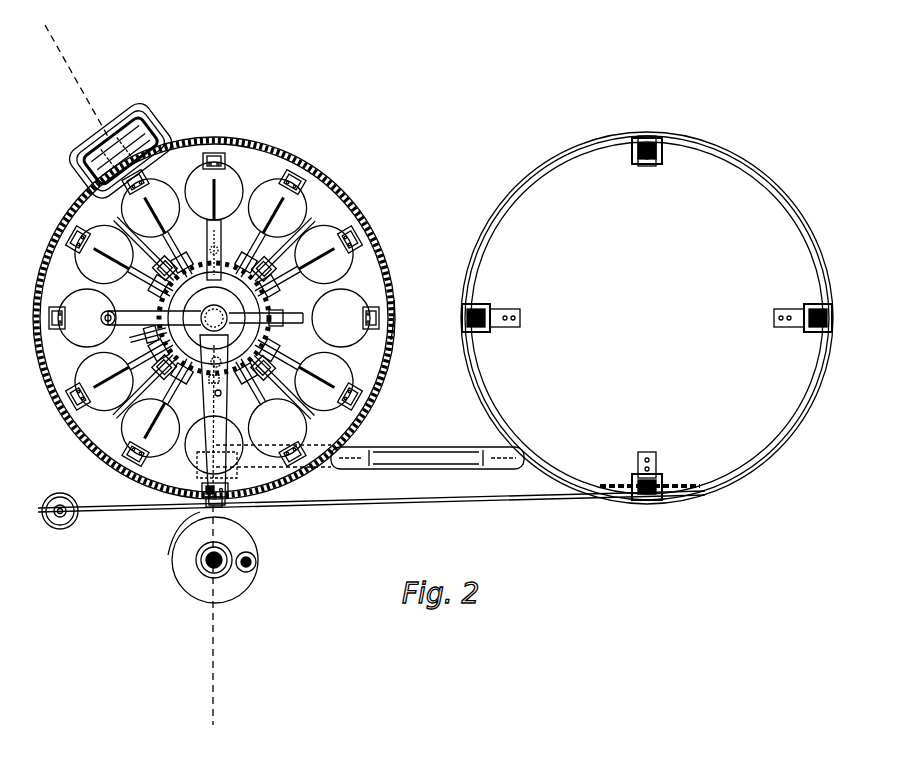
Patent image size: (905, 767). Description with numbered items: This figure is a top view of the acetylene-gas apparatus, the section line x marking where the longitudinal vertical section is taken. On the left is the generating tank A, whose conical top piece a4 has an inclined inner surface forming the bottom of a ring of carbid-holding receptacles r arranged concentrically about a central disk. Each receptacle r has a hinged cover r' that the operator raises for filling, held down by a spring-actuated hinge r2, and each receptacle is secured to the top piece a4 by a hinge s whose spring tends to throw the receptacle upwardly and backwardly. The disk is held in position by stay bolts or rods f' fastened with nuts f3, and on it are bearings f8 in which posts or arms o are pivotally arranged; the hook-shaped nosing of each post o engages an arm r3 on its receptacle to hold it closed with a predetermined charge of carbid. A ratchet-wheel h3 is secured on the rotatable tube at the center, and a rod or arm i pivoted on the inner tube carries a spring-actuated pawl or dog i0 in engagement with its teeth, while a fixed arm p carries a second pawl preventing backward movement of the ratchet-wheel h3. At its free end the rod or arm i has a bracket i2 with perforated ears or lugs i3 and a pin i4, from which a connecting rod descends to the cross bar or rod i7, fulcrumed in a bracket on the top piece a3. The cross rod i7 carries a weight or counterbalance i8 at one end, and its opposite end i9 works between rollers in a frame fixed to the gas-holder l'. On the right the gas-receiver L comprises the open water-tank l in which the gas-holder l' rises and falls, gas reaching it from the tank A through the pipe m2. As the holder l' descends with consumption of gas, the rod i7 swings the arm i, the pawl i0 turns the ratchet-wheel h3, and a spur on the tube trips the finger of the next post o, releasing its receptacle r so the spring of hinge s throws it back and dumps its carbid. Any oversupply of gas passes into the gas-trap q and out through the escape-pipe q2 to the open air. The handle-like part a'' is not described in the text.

The section line x is at (140, 377).
The tank A is at (214, 310).
The handle a'' is at (121, 144).
The top piece a3 is at (140, 310).
The top piece a4 is at (397, 290).
The hinged cover r' is at (214, 318).
The carbid-holding receptacle r is at (229, 299).
The spring-actuated hinge r2 is at (235, 175).
The arm r3 is at (222, 225).
The hinge s is at (222, 150).
The stay bolt or rod f' is at (214, 318).
The nut f3 is at (160, 350).
The bearing f8 is at (276, 312).
The ratchet-wheel h3 is at (290, 345).
The arm or post o is at (226, 332).
The arm p is at (223, 260).
The rod or arm i is at (213, 450).
The spring-actuated pawl or dog i0 is at (231, 362).
The bracket i2 is at (650, 136).
The perforated ears or lugs i3 is at (800, 335).
The pin i4 is at (172, 533).
The cross bar or rod i7 is at (420, 502).
The weight or counterbalance i8 is at (60, 529).
The end i9 is at (660, 495).
The pipe m2 is at (372, 445).
The gas-receiver L is at (647, 318).
The water-tank l is at (647, 318).
The gas-holder l' is at (647, 318).
The gas-trap q is at (243, 590).
The escape-pipe q2 is at (208, 562).